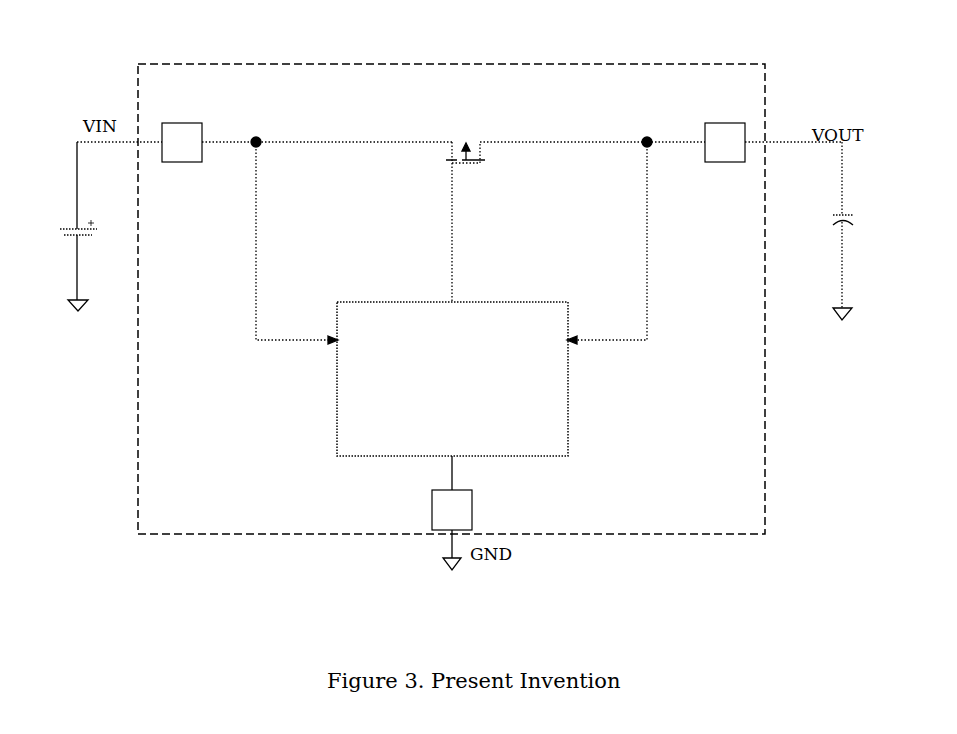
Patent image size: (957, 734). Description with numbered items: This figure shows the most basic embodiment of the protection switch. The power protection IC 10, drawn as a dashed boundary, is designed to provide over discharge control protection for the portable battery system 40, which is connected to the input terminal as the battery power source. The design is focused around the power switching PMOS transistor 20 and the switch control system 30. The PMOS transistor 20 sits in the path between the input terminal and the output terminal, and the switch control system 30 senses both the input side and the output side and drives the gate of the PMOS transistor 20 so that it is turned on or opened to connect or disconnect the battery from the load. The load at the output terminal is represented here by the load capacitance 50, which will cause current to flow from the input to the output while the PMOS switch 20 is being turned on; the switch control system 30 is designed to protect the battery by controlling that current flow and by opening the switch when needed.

The power protection IC 10 is at (280, 64).
The power switching PMOS transistor 20 is at (450, 142).
The switch control system 30 is at (413, 302).
The portable battery system 40 is at (75, 222).
The load capacitance 50 is at (845, 214).